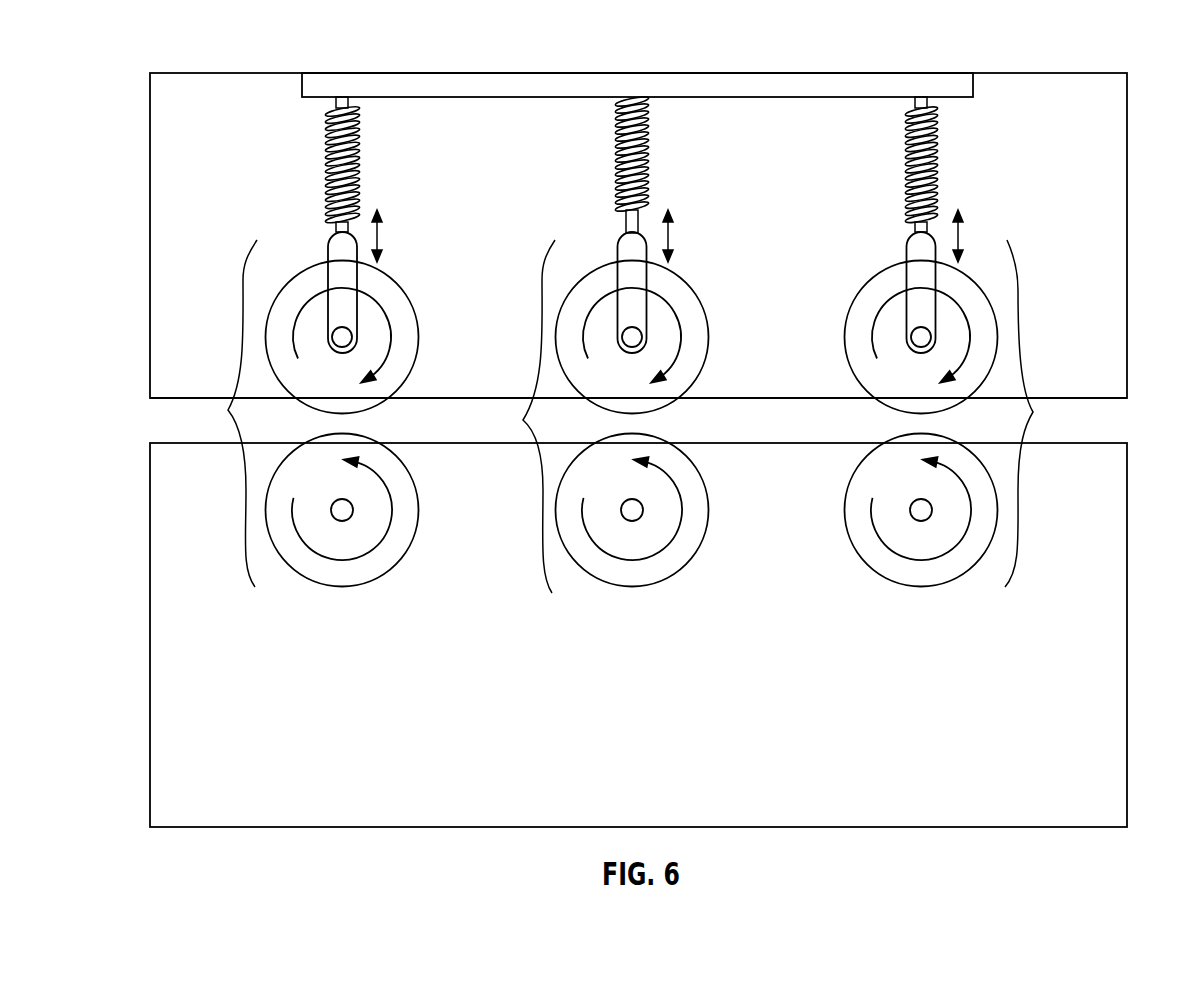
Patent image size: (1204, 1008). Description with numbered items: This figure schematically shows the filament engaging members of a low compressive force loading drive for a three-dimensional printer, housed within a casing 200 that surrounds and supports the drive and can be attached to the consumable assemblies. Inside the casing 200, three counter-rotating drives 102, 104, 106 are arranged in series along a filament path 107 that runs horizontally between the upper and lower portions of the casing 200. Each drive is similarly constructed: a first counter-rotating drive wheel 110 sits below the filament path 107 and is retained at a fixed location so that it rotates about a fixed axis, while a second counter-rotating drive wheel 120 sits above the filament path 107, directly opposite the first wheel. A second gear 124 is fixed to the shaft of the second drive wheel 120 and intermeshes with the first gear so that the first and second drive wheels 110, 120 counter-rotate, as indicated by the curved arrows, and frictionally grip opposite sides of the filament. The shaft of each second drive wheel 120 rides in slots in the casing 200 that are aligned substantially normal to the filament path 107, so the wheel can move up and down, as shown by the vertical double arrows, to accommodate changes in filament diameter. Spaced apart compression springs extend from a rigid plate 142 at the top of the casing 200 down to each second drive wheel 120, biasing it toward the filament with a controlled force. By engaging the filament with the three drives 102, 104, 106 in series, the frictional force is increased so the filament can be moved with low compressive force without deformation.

The casing 200 is at (1103, 278).
The plate 142 is at (938, 73).
The second counter-rotating drive wheel 120 is at (602, 313).
The second gear 124 is at (283, 290).
The first counter-rotating drive wheel 110 is at (342, 587).
The filament path 107 is at (202, 407).
The counter-rotating drive 102 is at (228, 410).
The counter-rotating drive 104 is at (523, 420).
The counter-rotating drive 106 is at (1033, 412).